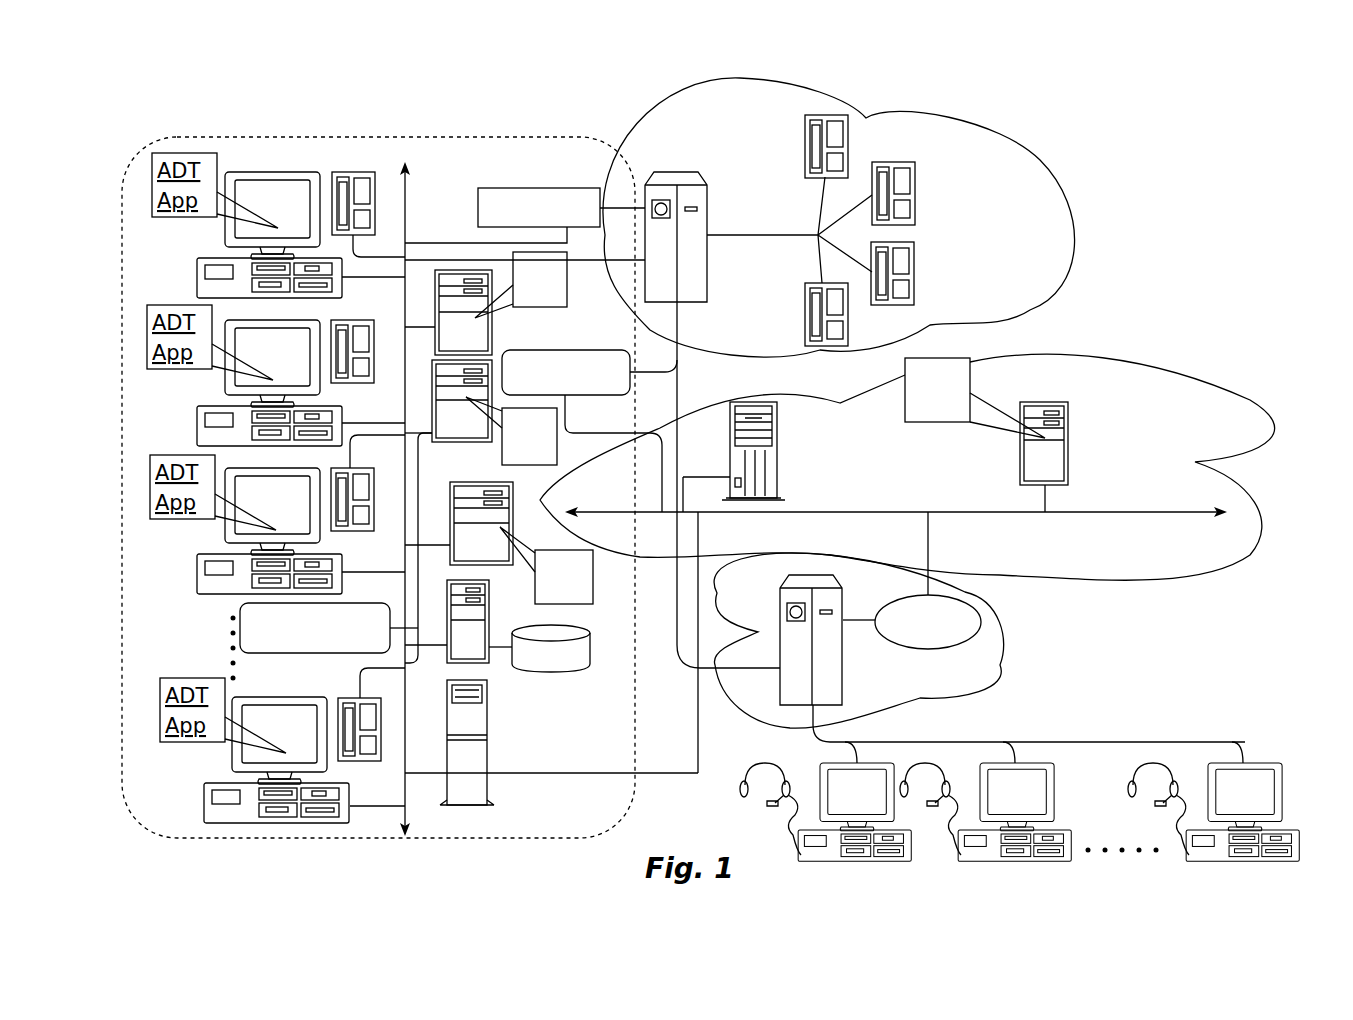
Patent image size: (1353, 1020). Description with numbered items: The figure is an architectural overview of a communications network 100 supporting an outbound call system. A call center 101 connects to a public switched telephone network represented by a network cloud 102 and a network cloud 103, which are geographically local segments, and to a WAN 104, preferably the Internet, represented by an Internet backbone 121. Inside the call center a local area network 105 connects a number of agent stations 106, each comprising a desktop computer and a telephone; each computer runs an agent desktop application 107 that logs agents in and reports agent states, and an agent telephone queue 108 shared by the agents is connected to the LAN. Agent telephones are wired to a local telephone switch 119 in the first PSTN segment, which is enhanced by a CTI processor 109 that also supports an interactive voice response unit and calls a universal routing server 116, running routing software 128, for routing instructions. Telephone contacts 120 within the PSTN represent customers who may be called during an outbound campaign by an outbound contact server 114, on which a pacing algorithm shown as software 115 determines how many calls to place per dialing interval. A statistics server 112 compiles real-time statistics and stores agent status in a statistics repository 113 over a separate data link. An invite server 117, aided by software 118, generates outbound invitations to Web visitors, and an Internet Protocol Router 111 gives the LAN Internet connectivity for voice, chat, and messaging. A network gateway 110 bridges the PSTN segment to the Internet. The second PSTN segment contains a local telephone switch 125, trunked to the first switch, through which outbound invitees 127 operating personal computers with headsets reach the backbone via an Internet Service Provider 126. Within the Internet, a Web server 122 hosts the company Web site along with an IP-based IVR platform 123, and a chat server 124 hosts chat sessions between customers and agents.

The communications network 100 is at (1162, 245).
The call center 101 is at (493, 110).
The PSTN network cloud 102 is at (867, 113).
The PSTN network cloud 103 is at (1035, 680).
The WAN 104 is at (1075, 355).
The local area network 105 is at (408, 203).
The agent stations 106 is at (275, 160).
The agent desktop application 107 is at (205, 678).
The agent telephone queue 108 is at (345, 653).
The CTI processor 109 is at (565, 188).
The network gateway 110 is at (573, 350).
The Internet Protocol Router 111 is at (487, 707).
The statistics server 112 is at (489, 620).
The statistics repository 113 is at (550, 672).
The outbound contact server 114 is at (480, 482).
The pacing algorithm software 115 is at (593, 563).
The universal routing server 116 is at (497, 357).
The invite server 117 is at (435, 322).
The invitation software 118 is at (567, 272).
The local telephone switch 119 is at (707, 207).
The telephone contacts 120 is at (966, 243).
The Internet backbone 121 is at (1100, 514).
The Web server 122 is at (1068, 433).
The IP-based IVR platform 123 is at (938, 425).
The chat server 124 is at (777, 467).
The local telephone switch 125 is at (843, 648).
The Internet Service Provider 126 is at (932, 652).
The outbound invitees 127 is at (1052, 725).
The routing software 128 is at (558, 443).